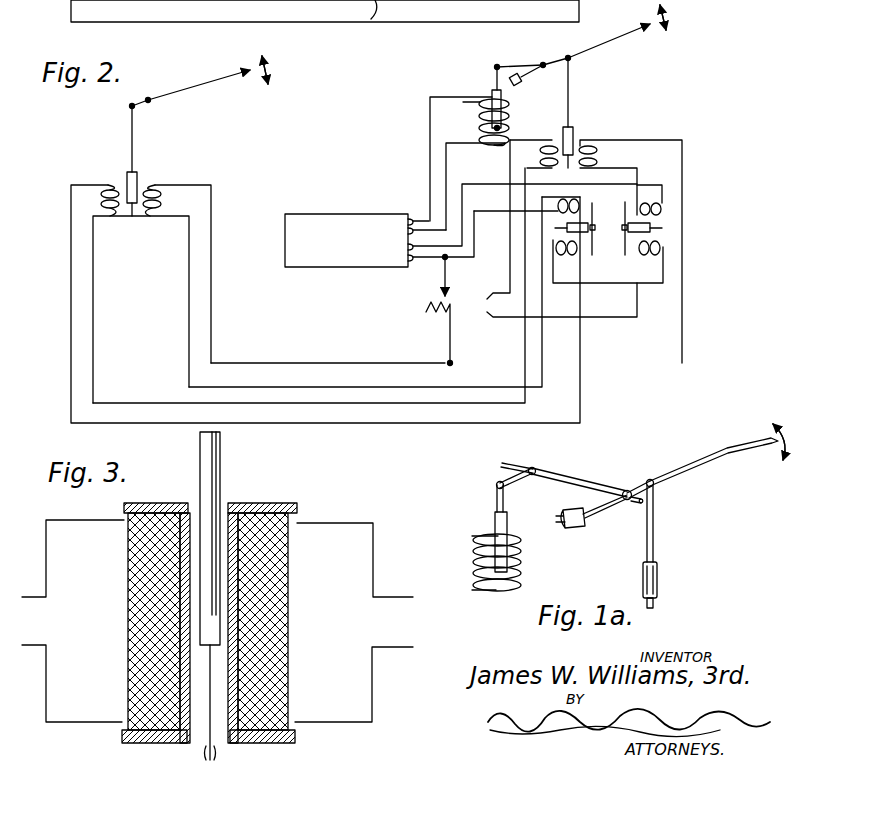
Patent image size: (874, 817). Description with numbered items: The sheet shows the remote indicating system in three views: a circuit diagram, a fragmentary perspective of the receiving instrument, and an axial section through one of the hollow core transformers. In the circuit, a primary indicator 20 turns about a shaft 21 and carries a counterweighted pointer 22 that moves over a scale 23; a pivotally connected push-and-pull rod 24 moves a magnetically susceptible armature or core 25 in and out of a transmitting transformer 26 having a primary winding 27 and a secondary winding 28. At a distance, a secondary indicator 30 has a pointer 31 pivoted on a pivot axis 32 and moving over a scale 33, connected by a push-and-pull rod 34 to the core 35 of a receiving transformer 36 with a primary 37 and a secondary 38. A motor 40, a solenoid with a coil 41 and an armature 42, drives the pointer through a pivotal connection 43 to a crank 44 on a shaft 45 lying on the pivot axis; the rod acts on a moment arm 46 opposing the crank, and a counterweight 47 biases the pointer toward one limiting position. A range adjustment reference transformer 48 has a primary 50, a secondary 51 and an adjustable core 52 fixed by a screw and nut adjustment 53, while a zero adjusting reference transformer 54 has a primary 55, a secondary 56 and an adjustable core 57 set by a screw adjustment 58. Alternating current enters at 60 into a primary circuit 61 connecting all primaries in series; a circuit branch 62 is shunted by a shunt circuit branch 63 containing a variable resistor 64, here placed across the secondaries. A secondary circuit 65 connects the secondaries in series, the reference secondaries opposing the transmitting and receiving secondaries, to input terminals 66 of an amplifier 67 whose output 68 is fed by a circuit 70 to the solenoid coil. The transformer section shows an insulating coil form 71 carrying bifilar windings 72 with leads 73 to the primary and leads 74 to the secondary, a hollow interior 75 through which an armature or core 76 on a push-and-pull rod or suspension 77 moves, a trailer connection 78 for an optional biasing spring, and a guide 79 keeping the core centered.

In FIG. 2, the primary indicator 20 is at (156, 87).
In FIG. 2, the shaft 21 is at (148, 100).
In FIG. 2, the pointer 22 is at (199, 77).
In FIG. 2, the scale 23 is at (272, 70).
In FIG. 2, the push-and-pull rod 24 is at (134, 144).
In FIG. 2, the armature or core 25 is at (137, 186).
In FIG. 2, the transmitting transformer 26 is at (122, 217).
In FIG. 2, the primary winding 27 is at (108, 188).
In FIG. 2, the secondary winding 28 is at (160, 202).
In FIG. 2, the secondary indicator 30 is at (601, 42).
In FIG. 1A, the secondary indicator 30 is at (710, 452).
In FIG. 2, the pointer 31 is at (598, 52).
In FIG. 1A, the pointer 31 is at (692, 462).
In FIG. 2, the pivot axis 32 is at (552, 75).
In FIG. 1A, the pivot axis 32 is at (634, 504).
In FIG. 2, the scale 33 is at (670, 16).
In FIG. 1A, the scale 33 is at (785, 424).
In FIG. 1A, the push-and-pull rod 34 is at (654, 538).
In FIG. 2, the armature or core 35 is at (573, 135).
In FIG. 2, the receiving transformer 36 is at (558, 135).
In FIG. 2, the primary 37 is at (540, 154).
In FIG. 2, the secondary 38 is at (597, 158).
In FIG. 2, the motor 40 is at (476, 133).
In FIG. 1A, the motor 40 is at (476, 562).
In FIG. 2, the coil 41 is at (480, 114).
In FIG. 1A, the coil 41 is at (520, 553).
In FIG. 2, the armature 42 is at (506, 128).
In FIG. 1A, the armature 42 is at (524, 560).
In FIG. 2, the pivotal connection 43 is at (495, 68).
In FIG. 1A, the pivotal connection 43 is at (496, 484).
In FIG. 2, the crank 44 is at (509, 64).
In FIG. 1A, the crank 44 is at (519, 474).
In FIG. 2, the shaft 45 is at (531, 63).
In FIG. 1A, the shaft 45 is at (598, 478).
In FIG. 2, the moment arm 46 is at (568, 57).
In FIG. 1A, the moment arm 46 is at (648, 481).
In FIG. 2, the counterweight 47 is at (519, 84).
In FIG. 1A, the counterweight 47 is at (575, 528).
In FIG. 2, the range adjustment reference transformer 48 is at (589, 220).
In FIG. 2, the primary 50 is at (608, 261).
In FIG. 2, the secondary 51 is at (572, 200).
In FIG. 2, the adjustable core 52 is at (588, 248).
In FIG. 2, the screw and nut adjustment 53 is at (596, 233).
In FIG. 2, the zero adjusting reference transformer 54 is at (655, 222).
In FIG. 2, the primary 55 is at (655, 256).
In FIG. 2, the secondary 56 is at (650, 202).
In FIG. 2, the adjustable core 57 is at (662, 232).
In FIG. 2, the screw adjustment 58 is at (621, 228).
In FIG. 2, the alternating current power source connection 60 is at (551, 228).
In FIG. 2, the primary circuit 61 is at (354, 36).
In FIG. 2, the circuit branch 62 is at (596, 284).
In FIG. 2, the shunt circuit branch 63 is at (444, 288).
In FIG. 2, the variable resistor 64 is at (332, 334).
In FIG. 2, the secondary circuit 65 is at (306, 372).
In FIG. 2, the input terminals 66 is at (404, 257).
In FIG. 2, the amplifier 67 is at (349, 240).
In FIG. 2, the output 68 is at (410, 220).
In FIG. 2, the circuit 70 is at (456, 156).
In FIG. 3, the transformer coil form 71 is at (153, 502).
In FIG. 3, the bifilar windings 72 is at (128, 591).
In FIG. 3, the leads 73 is at (22, 644).
In FIG. 3, the leads 74 is at (399, 647).
In FIG. 3, the hollow interior 75 is at (190, 508).
In FIG. 3, the armature or core 76 is at (220, 476).
In FIG. 3, the push-and-pull rod or suspension 77 is at (215, 432).
In FIG. 3, the trailer connection 78 is at (216, 746).
In FIG. 3, the guide 79 is at (204, 753).